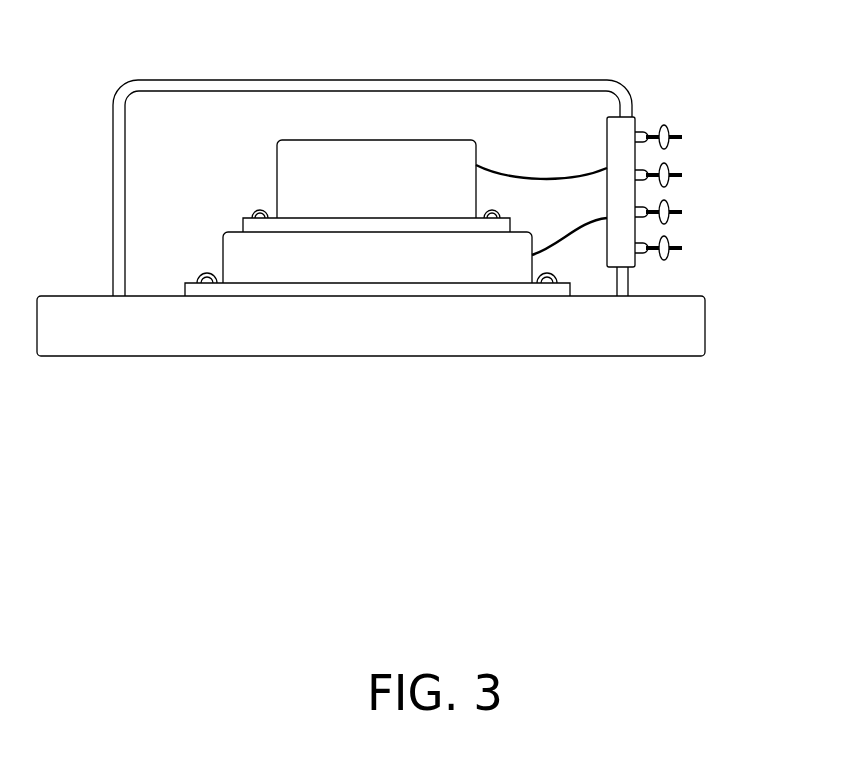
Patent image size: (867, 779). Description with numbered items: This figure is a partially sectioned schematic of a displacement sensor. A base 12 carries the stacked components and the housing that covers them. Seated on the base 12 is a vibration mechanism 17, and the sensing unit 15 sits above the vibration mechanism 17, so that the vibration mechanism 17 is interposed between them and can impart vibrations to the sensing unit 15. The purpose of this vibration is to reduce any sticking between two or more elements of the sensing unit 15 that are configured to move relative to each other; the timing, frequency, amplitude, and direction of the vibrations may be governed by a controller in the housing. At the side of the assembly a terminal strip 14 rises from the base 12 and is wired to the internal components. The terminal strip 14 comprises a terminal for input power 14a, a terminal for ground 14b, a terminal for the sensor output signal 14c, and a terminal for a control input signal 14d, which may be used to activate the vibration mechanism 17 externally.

The base 12 is at (612, 330).
The terminal strip 14 is at (632, 118).
The input power terminal 14a is at (675, 127).
The ground terminal 14b is at (682, 160).
The sensor output signal terminal 14c is at (685, 220).
The control input signal terminal 14d is at (680, 260).
The sensing unit 15 is at (308, 165).
The vibration mechanism 17 is at (325, 265).